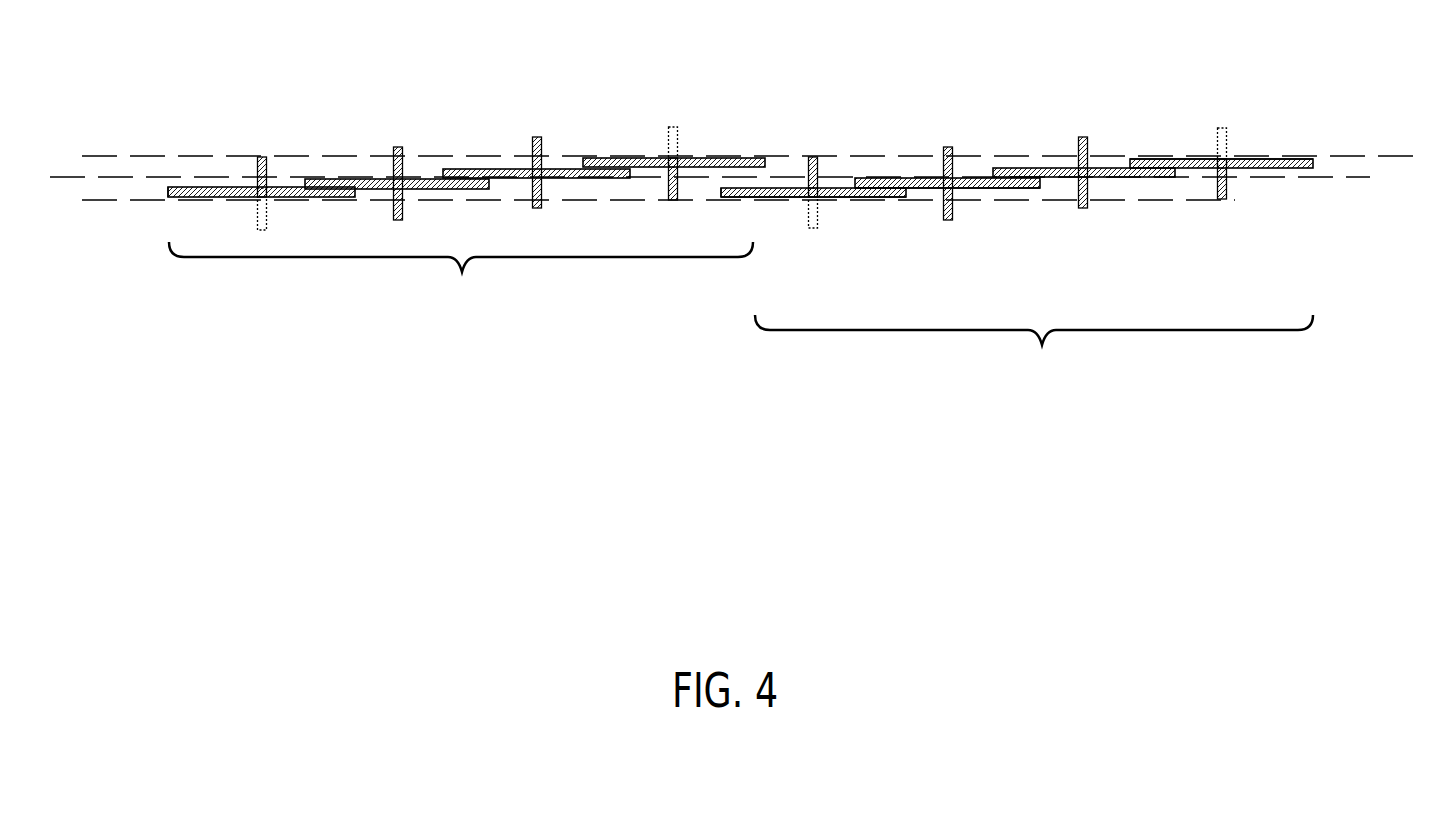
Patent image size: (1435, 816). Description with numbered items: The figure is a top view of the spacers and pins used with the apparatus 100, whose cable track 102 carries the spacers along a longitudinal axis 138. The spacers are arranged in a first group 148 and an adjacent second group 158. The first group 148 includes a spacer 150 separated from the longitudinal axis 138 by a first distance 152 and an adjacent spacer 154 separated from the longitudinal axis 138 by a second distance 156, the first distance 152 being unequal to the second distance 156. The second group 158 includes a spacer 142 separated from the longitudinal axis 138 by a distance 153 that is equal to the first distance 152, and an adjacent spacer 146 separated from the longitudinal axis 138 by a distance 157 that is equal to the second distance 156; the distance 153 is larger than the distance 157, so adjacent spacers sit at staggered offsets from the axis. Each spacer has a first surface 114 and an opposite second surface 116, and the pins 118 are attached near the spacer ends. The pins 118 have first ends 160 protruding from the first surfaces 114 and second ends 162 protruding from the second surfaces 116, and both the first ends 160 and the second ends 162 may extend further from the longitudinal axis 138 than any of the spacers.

The apparatus 100 is at (1160, 95).
The cable track 102 is at (1288, 160).
The first surfaces 114 is at (1265, 168).
The second surfaces 116 is at (778, 185).
The pins 118 is at (675, 128).
The longitudinal axis 138 is at (115, 175).
The spacer 142 is at (842, 197).
The spacer 146 is at (982, 188).
The first group of spacers 148 is at (461, 273).
The spacer 150 is at (220, 187).
The first distance 152 is at (167, 182).
The distance 153 is at (718, 182).
The spacer 154 is at (438, 178).
The second distance 156 is at (345, 180).
The distance 157 is at (855, 178).
The second group of spacers 158 is at (1034, 348).
The first ends 160 is at (1222, 200).
The second ends 162 is at (813, 157).